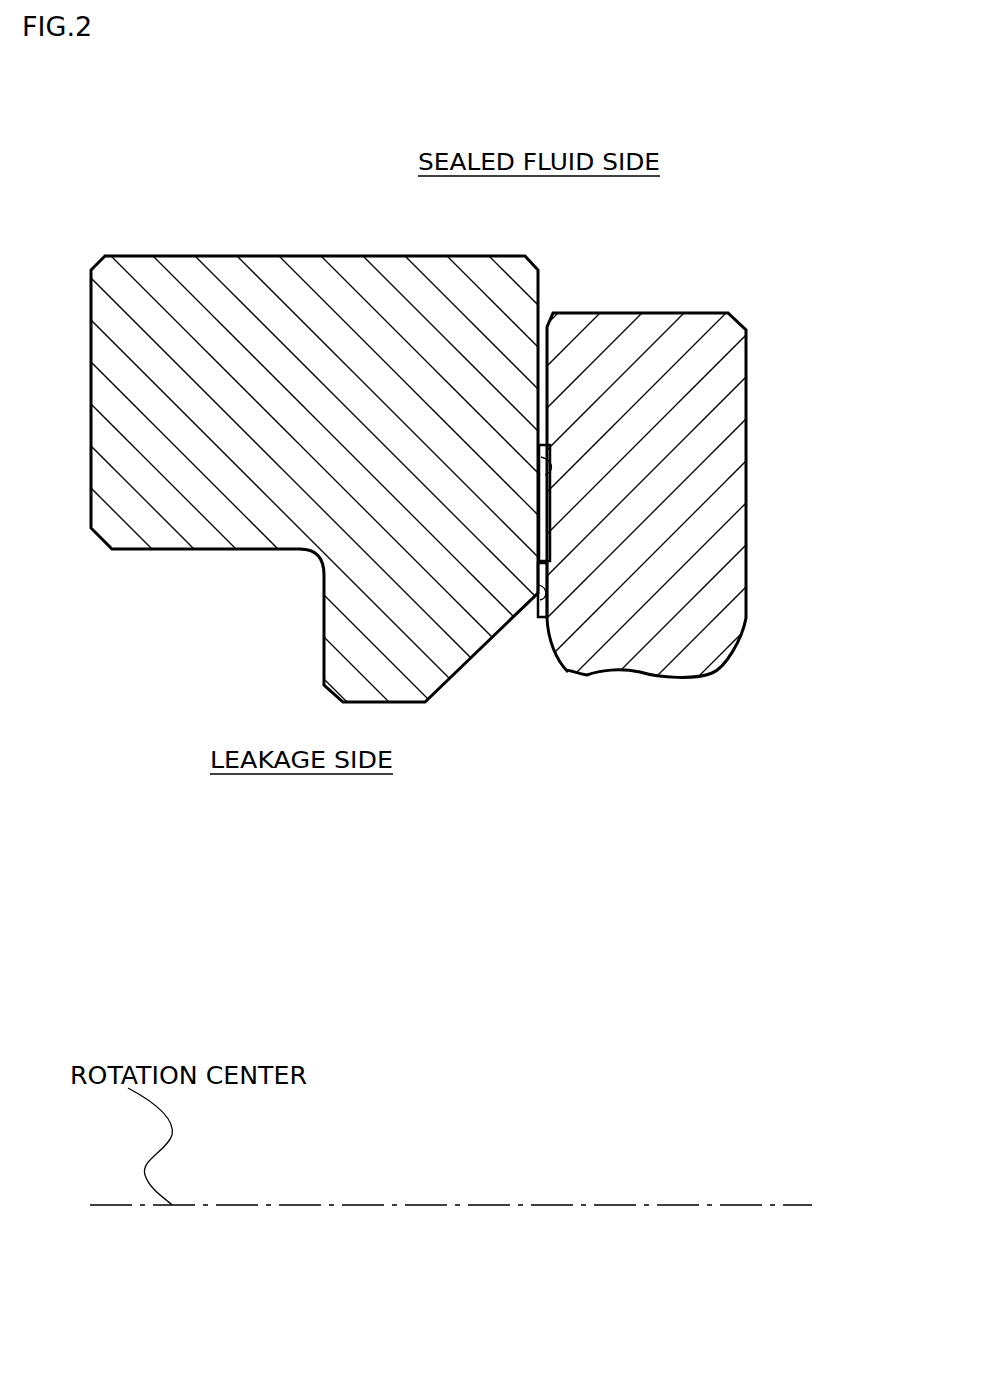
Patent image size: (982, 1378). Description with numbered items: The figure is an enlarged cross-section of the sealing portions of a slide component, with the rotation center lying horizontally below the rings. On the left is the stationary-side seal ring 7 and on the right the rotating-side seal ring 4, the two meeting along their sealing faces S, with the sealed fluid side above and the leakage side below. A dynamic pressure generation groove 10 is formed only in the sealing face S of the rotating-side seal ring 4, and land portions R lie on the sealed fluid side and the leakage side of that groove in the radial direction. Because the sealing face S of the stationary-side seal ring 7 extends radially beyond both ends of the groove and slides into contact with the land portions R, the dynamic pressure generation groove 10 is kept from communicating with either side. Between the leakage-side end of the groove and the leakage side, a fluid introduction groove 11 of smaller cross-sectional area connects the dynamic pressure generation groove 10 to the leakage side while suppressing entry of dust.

The stationary-side seal ring 7 is at (335, 256).
The rotating-side seal ring 4 is at (692, 313).
The dynamic pressure generation groove 10 is at (550, 505).
The fluid introduction groove 11 is at (550, 575).
The sealing face S is at (537, 527).
The land portion R is at (537, 442).